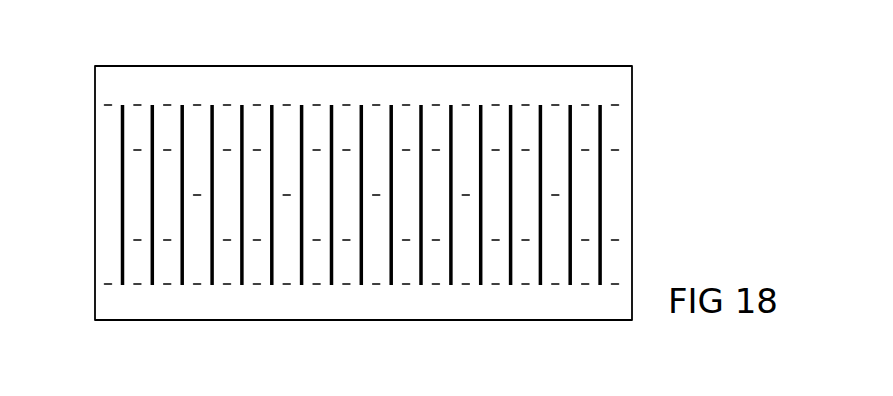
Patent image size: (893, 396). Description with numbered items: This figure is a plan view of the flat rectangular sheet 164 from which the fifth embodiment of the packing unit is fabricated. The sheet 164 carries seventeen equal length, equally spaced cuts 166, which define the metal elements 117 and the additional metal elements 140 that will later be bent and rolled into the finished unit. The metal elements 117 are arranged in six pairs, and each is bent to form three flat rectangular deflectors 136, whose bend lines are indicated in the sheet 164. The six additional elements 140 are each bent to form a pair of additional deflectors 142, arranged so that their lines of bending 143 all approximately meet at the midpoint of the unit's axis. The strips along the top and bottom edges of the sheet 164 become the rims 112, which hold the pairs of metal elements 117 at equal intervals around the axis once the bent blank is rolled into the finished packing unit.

The rims 112 is at (519, 76).
The metal elements 117 is at (122, 290).
The flat rectangular deflectors 136 is at (130, 172).
The additional metal elements 140 is at (108, 274).
The additional deflectors 142 is at (103, 123).
The lines of bending 143 is at (106, 194).
The rectangular sheet 164 is at (650, 77).
The cuts 166 is at (186, 126).